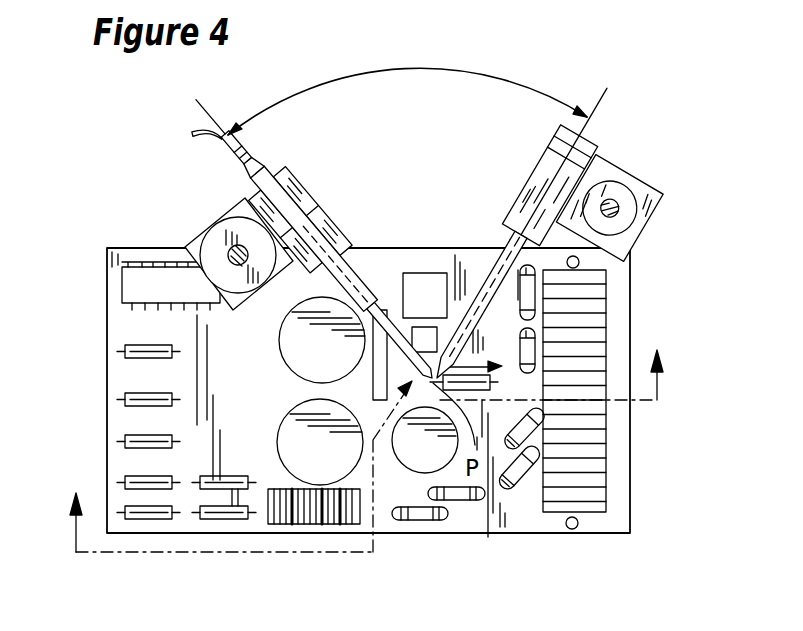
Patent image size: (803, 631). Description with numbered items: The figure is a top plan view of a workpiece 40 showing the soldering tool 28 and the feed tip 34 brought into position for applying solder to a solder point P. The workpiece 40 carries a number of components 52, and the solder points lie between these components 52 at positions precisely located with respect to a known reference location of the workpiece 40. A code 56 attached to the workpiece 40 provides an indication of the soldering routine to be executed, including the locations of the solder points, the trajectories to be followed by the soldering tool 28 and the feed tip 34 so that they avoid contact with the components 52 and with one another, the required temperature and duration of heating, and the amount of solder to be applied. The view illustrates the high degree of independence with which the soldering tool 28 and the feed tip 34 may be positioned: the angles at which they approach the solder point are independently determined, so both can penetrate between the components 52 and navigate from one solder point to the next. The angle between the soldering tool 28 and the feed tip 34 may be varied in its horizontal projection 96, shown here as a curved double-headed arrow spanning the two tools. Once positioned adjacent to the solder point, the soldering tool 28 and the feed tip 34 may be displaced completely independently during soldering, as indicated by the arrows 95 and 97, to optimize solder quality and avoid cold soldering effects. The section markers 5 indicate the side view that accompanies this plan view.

The first tool 28 is at (352, 258).
The second tool 34 is at (492, 268).
The circuit board 40 is at (455, 532).
The component 52 is at (536, 348).
The connector 56 is at (292, 493).
The beam path 95 is at (428, 386).
The arc of rotation 96 is at (436, 72).
The work site 97 is at (478, 390).
The section line 5- 5 is at (367, 451).